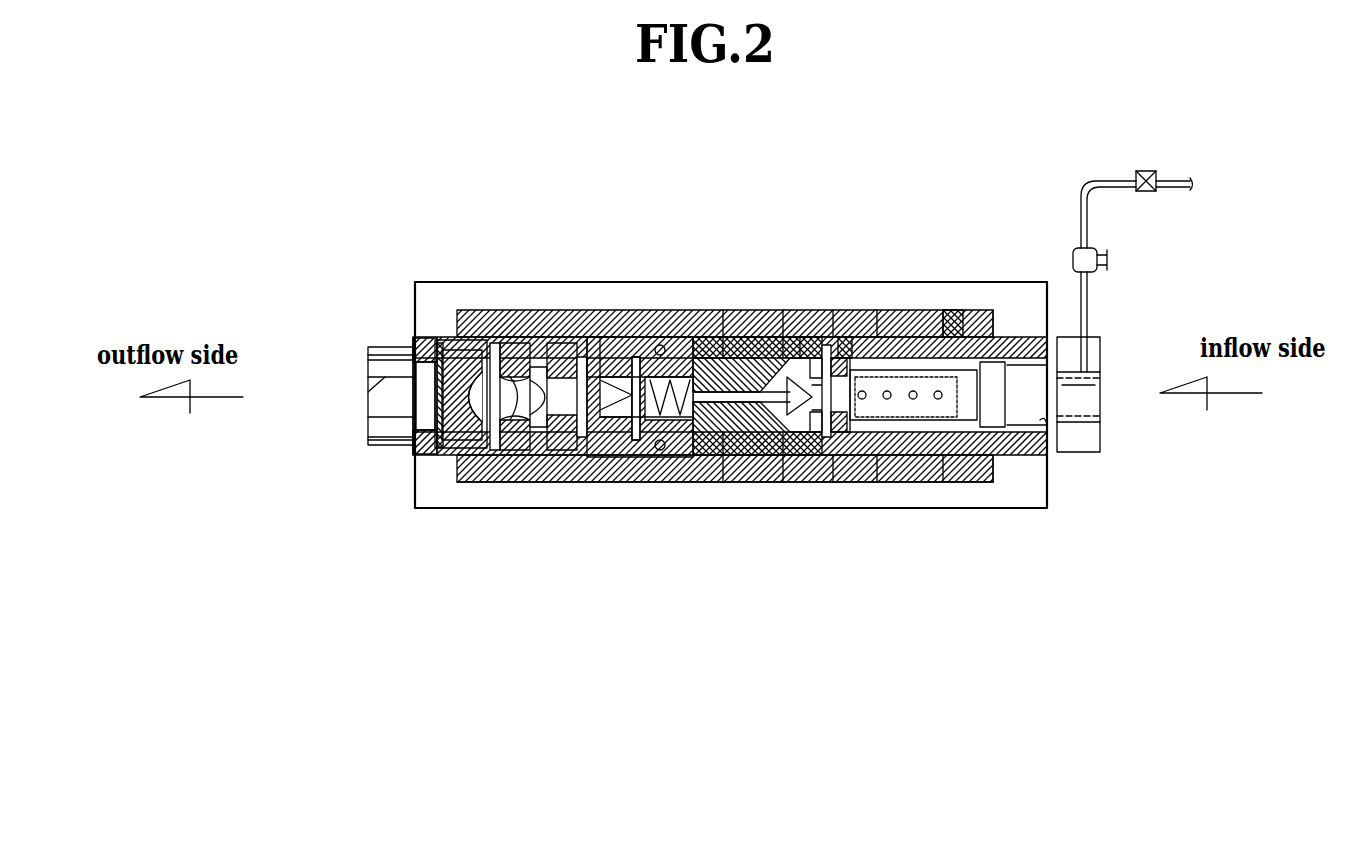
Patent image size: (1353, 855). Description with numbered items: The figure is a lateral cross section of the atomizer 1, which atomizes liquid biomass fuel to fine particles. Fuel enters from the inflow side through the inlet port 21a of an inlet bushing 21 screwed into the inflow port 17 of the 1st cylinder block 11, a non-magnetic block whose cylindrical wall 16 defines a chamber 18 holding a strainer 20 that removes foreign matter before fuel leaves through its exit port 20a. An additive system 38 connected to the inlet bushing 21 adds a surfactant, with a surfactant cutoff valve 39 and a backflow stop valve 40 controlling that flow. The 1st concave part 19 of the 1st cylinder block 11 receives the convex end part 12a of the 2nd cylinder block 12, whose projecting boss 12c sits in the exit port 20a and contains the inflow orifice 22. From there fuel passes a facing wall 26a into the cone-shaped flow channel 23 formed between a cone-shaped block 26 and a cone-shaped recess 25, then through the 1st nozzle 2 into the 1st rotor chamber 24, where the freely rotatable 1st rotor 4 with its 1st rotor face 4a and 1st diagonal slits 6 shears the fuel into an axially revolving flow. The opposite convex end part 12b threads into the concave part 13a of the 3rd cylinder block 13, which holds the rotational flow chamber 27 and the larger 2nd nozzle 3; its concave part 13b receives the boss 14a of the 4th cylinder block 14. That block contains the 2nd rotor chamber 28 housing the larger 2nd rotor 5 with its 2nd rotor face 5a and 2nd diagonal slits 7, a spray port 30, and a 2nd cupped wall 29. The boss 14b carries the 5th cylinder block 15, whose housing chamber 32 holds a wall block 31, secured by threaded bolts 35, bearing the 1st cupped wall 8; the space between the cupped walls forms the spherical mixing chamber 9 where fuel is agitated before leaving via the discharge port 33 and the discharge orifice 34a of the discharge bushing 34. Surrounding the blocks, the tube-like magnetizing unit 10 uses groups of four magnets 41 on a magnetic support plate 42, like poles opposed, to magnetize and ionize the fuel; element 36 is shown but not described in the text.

The atomizer 1 is at (523, 558).
The 1st nozzle 2 is at (742, 485).
The 2nd nozzle 3 is at (592, 482).
The 1st rotor 4 is at (680, 485).
The 1st rotor face 4a is at (712, 485).
The 2nd rotor 5 is at (545, 482).
The 2nd rotor face 5a is at (580, 482).
The 1st diagonal slit 6 is at (684, 345).
The 2nd diagonal slit 7 is at (556, 340).
The 1st cupped wall 8 is at (478, 482).
The mixing chamber 9 is at (510, 340).
The magnetizing unit 10 is at (903, 310).
The 1st cylinder block 11 is at (1019, 331).
The 2nd cylinder block 12 is at (760, 335).
The convex end part 12a is at (790, 335).
The convex end part 12b is at (641, 345).
The projecting boss 12c is at (822, 485).
The 3rd cylinder block 13 is at (652, 345).
The concave part 13a is at (675, 482).
The concave part 13b is at (592, 340).
The 4th cylinder block 14 is at (542, 345).
The boss 14a is at (572, 482).
The boss 14b is at (500, 345).
The 5th cylinder block 15 is at (430, 330).
The cylindrical wall 16 is at (890, 485).
The inflow port 17 is at (1040, 425).
The chamber 18 is at (915, 485).
The 1st concave part 19 is at (810, 335).
The strainer 20 is at (958, 485).
The exit port 20a is at (888, 485).
The inlet bushing 21 is at (1080, 455).
The inlet port 21a is at (1088, 415).
The inflow orifice 22 is at (845, 340).
The cone-shaped flow channel 23 is at (810, 485).
The 1st rotor chamber 24 is at (712, 340).
The cone-shaped recess 25 is at (770, 485).
The cone-shaped block 26 is at (747, 335).
The facing wall 26a is at (850, 485).
The rotational flow chamber 27 is at (610, 340).
The 2nd rotor chamber 28 is at (587, 345).
The 2nd cupped wall 29 is at (508, 482).
The spray port 30 is at (530, 340).
The wall block 31 is at (430, 450).
The housing chamber 32 is at (437, 345).
The discharge port 33 is at (400, 345).
The discharge bushing 34 is at (368, 432).
The discharge orifice 34a is at (367, 390).
The threaded bolts 35 is at (490, 335).
The end plate 36 is at (982, 335).
The additive system 38 is at (1090, 304).
The surfactant cutoff valve 39 is at (1092, 257).
The backflow stop valve 40 is at (1147, 178).
The magnets 41 is at (878, 335).
The magnetic support plate 42 is at (948, 335).